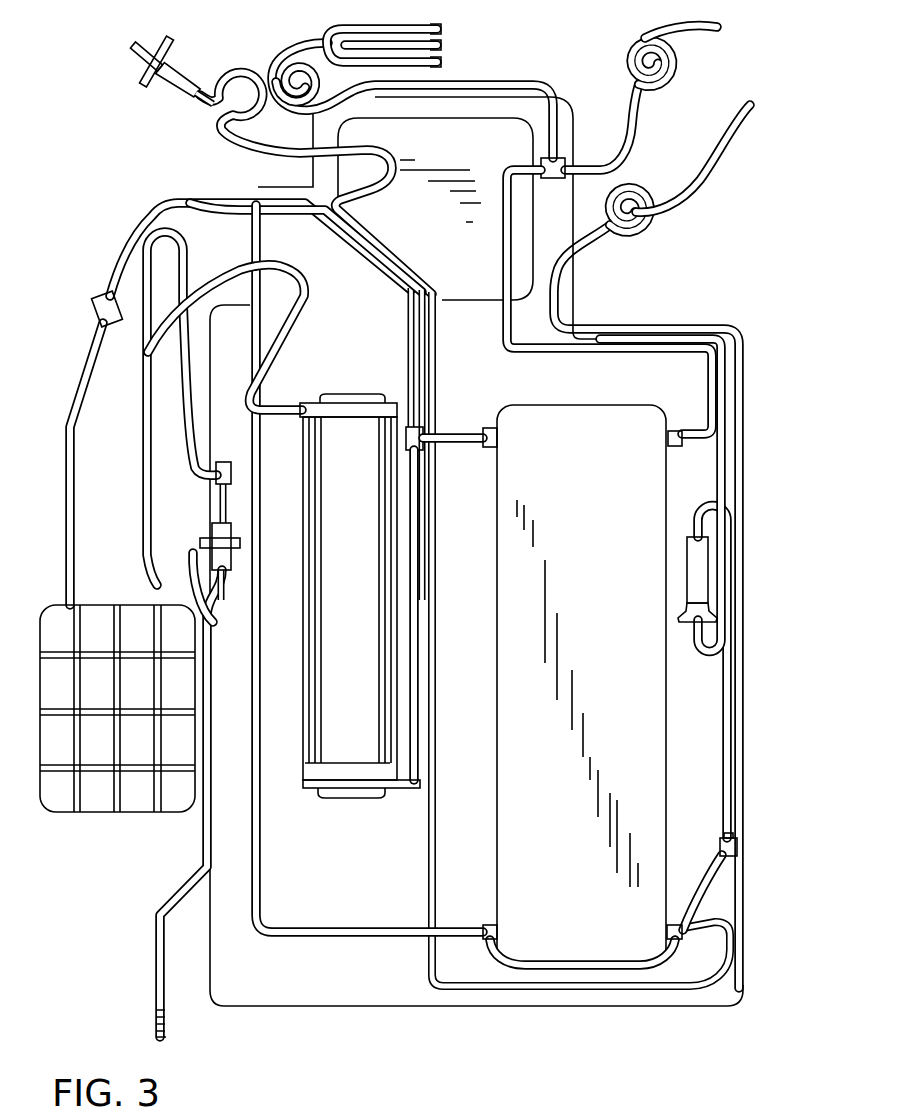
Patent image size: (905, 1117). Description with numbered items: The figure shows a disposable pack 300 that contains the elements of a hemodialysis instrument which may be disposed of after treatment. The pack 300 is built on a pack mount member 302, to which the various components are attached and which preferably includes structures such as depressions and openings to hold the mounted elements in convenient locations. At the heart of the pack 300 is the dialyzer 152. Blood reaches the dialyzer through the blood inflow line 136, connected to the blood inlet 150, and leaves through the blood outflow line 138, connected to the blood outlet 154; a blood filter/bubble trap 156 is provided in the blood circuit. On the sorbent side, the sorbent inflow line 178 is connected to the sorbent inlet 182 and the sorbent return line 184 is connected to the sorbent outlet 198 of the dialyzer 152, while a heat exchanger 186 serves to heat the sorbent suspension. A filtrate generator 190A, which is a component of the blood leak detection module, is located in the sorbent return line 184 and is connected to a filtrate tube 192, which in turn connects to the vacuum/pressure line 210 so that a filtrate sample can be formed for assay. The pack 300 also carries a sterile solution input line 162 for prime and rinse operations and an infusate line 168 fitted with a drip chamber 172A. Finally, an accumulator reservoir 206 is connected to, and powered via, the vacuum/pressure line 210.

The blood inflow line 136 is at (637, 138).
The blood outflow line 138 is at (660, 228).
The blood inlet 150 is at (674, 430).
The dialyzer 152 is at (618, 756).
The blood outlet 154 is at (676, 942).
The blood filter/bubble trap 156 is at (700, 587).
The sterile solution input line 162 is at (482, 82).
The infusate line 168 is at (215, 128).
The drip chamber 172A is at (180, 62).
The sorbent inflow line 178 is at (143, 520).
The sorbent inlet 182 is at (490, 942).
The sorbent return line 184 is at (377, 268).
The heat exchanger 186 is at (105, 815).
The filtrate generator 190A is at (105, 290).
The filtrate tube 192 is at (178, 232).
The sorbent outlet 198 is at (490, 425).
The accumulator reservoir 206 is at (305, 772).
The vacuum/pressure line 210 is at (303, 397).
The disposable pack 300 is at (724, 68).
The pack mount member 302 is at (690, 302).